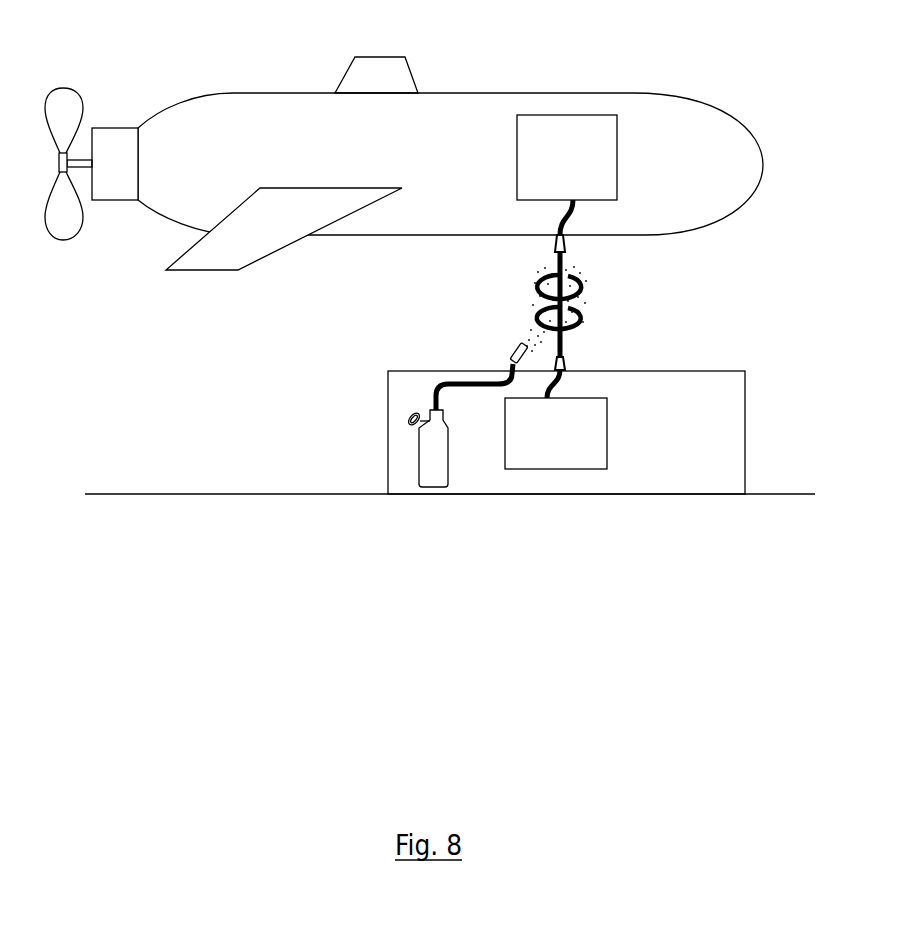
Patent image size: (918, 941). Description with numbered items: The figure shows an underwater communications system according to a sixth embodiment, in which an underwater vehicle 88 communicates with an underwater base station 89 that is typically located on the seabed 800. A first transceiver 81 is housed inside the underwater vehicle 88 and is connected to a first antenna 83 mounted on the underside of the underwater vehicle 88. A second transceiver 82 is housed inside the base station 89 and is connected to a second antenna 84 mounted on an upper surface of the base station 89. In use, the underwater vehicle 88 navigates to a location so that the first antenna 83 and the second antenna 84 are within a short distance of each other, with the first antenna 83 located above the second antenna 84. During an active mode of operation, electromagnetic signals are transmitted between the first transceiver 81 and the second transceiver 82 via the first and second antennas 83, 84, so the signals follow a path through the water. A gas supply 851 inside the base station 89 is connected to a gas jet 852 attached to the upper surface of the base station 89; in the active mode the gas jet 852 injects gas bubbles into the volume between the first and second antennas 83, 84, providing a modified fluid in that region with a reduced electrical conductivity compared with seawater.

The underwater vehicle 88 is at (232, 92).
The first transceiver 81 is at (567, 157).
The second transceiver 82 is at (556, 433).
The first antenna 83 is at (582, 282).
The second antenna 84 is at (583, 318).
The underwater base station 89 is at (388, 406).
The gas supply 851 is at (418, 463).
The gas jet 852 is at (511, 360).
The seabed 800 is at (280, 494).